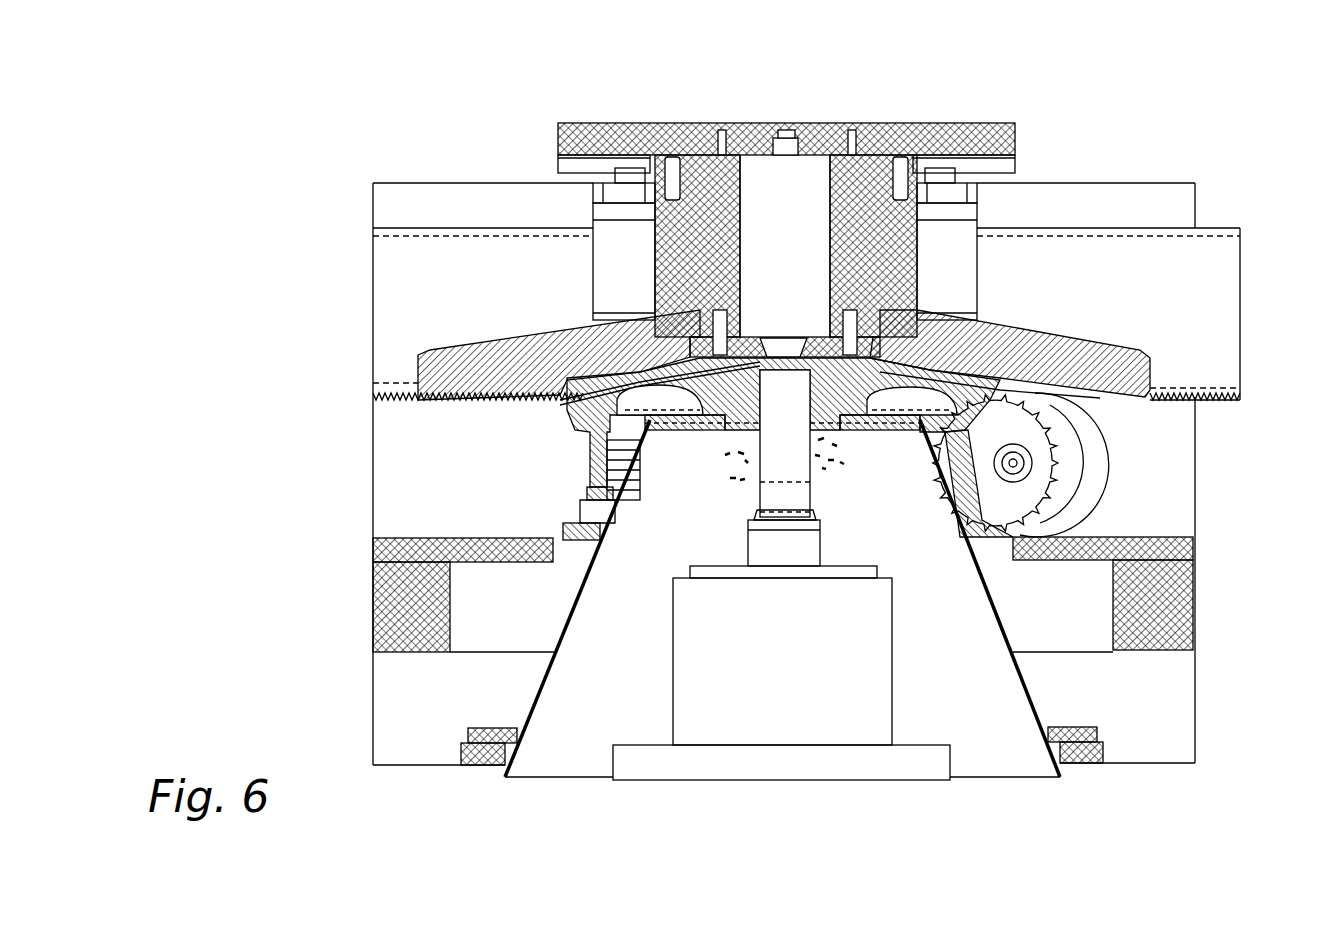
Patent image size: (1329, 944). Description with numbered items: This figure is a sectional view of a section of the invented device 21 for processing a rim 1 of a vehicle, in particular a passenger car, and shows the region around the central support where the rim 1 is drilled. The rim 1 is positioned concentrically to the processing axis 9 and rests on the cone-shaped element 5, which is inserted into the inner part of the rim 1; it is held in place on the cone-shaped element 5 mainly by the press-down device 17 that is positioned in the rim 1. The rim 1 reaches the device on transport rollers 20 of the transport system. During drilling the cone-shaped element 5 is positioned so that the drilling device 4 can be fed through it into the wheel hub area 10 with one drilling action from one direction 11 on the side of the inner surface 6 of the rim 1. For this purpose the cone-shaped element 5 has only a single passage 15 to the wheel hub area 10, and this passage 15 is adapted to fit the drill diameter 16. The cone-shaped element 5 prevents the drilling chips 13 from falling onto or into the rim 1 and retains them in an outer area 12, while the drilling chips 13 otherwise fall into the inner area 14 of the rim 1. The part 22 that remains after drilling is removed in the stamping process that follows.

The rim 1 is at (590, 412).
The drilling device 4 is at (828, 802).
The cone-shaped element 5 is at (1021, 688).
The inner surface of the rim 6 is at (584, 646).
The processing axis 9 is at (785, 18).
The wheel hub area 10 is at (785, 343).
The direction of drilling 11 is at (755, 873).
The outer area 12 is at (831, 352).
The drilling chips 13 is at (840, 458).
The inner area of the rim 14 is at (945, 670).
The passage 15 is at (740, 428).
The drill diameter 16 is at (770, 488).
The press-down device 17 is at (418, 358).
The transport rollers 20 is at (578, 470).
The device to process 21 is at (1195, 130).
The remaining part 22 is at (778, 343).